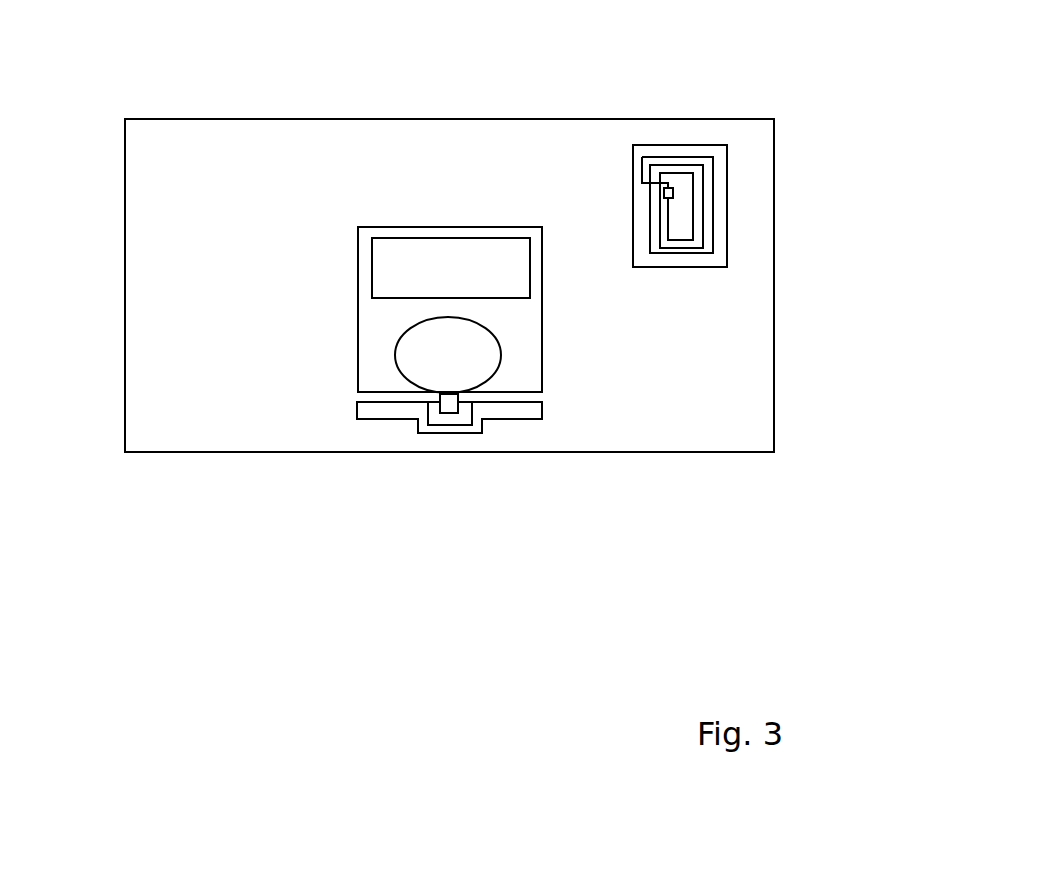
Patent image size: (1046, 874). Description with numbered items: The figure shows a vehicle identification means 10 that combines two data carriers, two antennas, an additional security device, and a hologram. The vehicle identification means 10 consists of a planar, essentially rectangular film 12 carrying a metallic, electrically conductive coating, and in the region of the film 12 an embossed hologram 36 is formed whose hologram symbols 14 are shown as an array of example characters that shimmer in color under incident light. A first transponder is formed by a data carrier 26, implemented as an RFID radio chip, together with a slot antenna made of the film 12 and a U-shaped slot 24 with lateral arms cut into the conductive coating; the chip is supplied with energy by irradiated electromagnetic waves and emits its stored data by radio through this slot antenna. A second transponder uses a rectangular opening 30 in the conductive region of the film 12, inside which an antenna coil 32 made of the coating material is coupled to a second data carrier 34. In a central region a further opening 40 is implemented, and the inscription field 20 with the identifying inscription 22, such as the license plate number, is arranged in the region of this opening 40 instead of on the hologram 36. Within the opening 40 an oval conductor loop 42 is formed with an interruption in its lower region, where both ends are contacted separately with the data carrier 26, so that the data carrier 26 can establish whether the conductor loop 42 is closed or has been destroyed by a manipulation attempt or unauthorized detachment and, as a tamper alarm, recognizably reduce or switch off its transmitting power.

The vehicle identification means 10 is at (184, 564).
The film 12 is at (469, 385).
The hologram 36 is at (663, 415).
The hologram symbols 14 is at (444, 216).
The inscription field 20 is at (510, 333).
The inscription 22 is at (422, 245).
The slot 24 is at (397, 413).
The data carrier 26 is at (447, 411).
The opening 30 is at (640, 208).
The antenna coil 32 is at (657, 157).
The data carrier 34 is at (673, 190).
The opening 40 is at (532, 332).
The conductor loop 42 is at (495, 375).